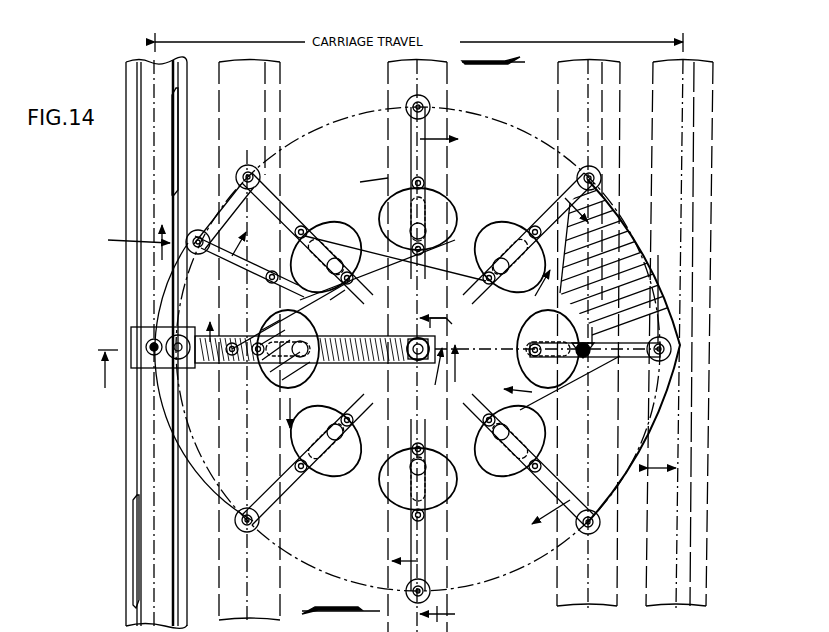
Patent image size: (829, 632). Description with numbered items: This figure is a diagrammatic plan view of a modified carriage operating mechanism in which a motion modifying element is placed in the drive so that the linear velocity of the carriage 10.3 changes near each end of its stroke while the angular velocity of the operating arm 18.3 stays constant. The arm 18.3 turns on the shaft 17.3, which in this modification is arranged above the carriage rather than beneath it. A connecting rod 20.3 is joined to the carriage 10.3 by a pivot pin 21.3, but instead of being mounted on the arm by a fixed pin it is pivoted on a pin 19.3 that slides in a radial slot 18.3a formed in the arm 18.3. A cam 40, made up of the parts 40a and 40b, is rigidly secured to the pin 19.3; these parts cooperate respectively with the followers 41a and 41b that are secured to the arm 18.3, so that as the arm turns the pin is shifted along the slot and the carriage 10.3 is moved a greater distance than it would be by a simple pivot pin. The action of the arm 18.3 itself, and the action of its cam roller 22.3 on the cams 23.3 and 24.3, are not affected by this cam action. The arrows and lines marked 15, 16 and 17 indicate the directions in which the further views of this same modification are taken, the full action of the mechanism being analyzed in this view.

The carriage 10.3 is at (130, 568).
The transverse direction 15 is at (274, 367).
The longitudinal direction 16 is at (262, 315).
The travel direction 17 is at (530, 334).
The shaft 17.3 is at (402, 366).
The arm 18.3 is at (330, 368).
The radial slot 18.3a is at (517, 240).
The pin 19.3 is at (480, 455).
The connecting rod 20.3 is at (160, 333).
The pivot pin 21.3 is at (150, 345).
The cam roller 22.3 is at (160, 368).
The cam 23.3 is at (140, 533).
The cam 24.3 is at (165, 150).
The cam 40 is at (284, 384).
The cam part 40a is at (447, 216).
The cam part 40b is at (452, 238).
The follower 41a is at (410, 184).
The follower 41b is at (330, 300).